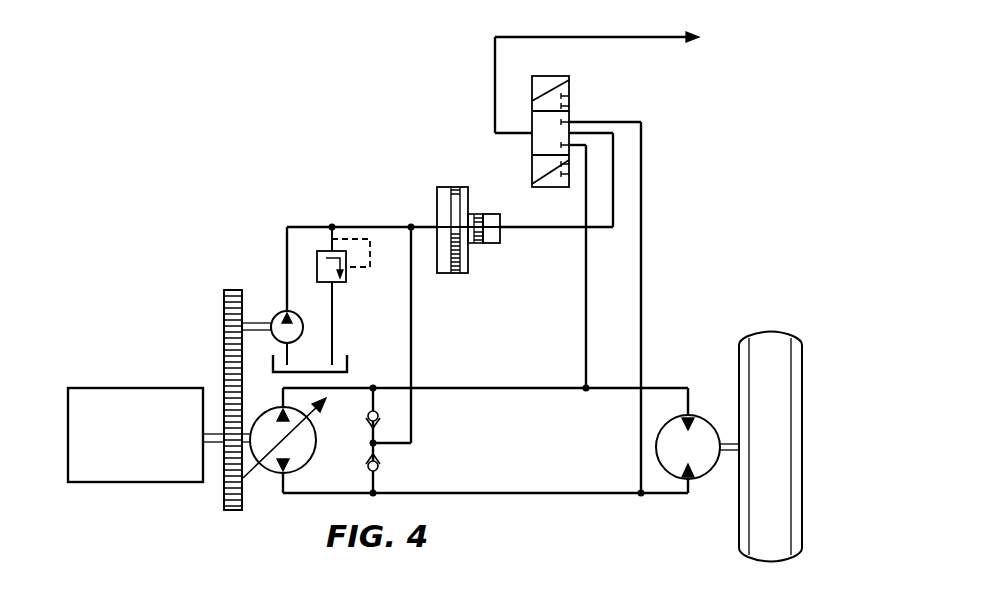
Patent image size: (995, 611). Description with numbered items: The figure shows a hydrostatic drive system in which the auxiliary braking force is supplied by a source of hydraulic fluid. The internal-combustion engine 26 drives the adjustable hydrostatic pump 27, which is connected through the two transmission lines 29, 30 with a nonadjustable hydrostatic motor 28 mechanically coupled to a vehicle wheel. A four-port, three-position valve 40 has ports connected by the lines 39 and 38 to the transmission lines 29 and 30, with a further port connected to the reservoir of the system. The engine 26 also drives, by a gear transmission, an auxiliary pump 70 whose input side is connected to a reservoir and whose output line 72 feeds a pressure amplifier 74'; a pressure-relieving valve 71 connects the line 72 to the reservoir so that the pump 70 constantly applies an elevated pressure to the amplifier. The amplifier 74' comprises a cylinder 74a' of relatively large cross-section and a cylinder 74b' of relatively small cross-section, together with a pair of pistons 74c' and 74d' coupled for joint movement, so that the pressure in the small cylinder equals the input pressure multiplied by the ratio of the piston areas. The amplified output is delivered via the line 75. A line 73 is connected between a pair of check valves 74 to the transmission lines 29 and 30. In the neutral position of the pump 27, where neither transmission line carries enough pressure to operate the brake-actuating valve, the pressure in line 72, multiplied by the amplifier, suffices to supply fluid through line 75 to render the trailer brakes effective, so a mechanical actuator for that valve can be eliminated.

The internal-combustion engine 26 is at (133, 478).
The hydrostatic pump 27 is at (306, 460).
The hydrostatic motor 28 is at (701, 472).
The line 29 is at (556, 497).
The line 30 is at (662, 388).
The line 38 is at (645, 262).
The line 39 is at (585, 352).
The valve 40 is at (571, 89).
The auxiliary pump 70 is at (299, 317).
The relief valve 71 is at (346, 283).
The output line 72 is at (303, 225).
The line 73 is at (413, 330).
The checkvalves 74 is at (380, 441).
The pressure amplifier 74' is at (463, 221).
The cylinder 74a' is at (402, 179).
The cylinder 74b' is at (501, 202).
The piston 74c' is at (449, 202).
The piston 74d' is at (514, 241).
The line 75 is at (553, 227).